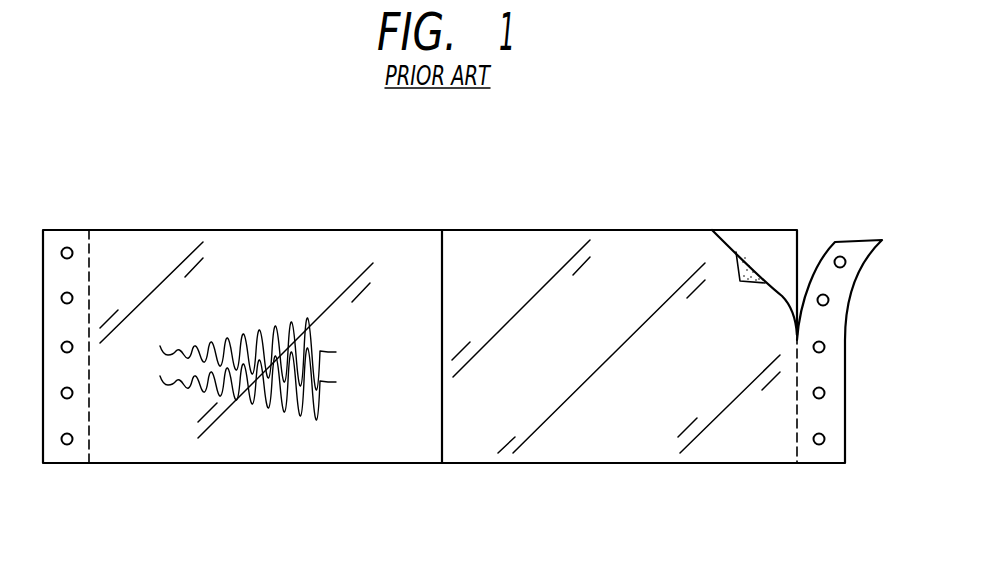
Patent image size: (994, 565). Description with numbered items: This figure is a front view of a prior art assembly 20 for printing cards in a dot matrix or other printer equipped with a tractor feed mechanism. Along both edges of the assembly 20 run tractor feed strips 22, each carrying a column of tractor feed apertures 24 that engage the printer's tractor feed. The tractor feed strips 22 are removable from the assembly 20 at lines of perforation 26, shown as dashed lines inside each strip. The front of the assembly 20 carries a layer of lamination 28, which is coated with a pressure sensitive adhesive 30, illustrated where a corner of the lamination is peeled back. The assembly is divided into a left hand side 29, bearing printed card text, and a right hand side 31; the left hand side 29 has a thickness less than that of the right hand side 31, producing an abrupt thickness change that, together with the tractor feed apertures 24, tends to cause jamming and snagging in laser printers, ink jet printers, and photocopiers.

The prior art assembly 20 is at (398, 221).
The tractor feed strips 22 is at (62, 236).
The tractor feed apertures 24 is at (73, 297).
The lines of perforation 26 is at (90, 243).
The layer of lamination 28 is at (246, 252).
The left hand side 29 is at (360, 447).
The pressure sensitive adhesive 30 is at (753, 266).
The right hand side 31 is at (618, 452).